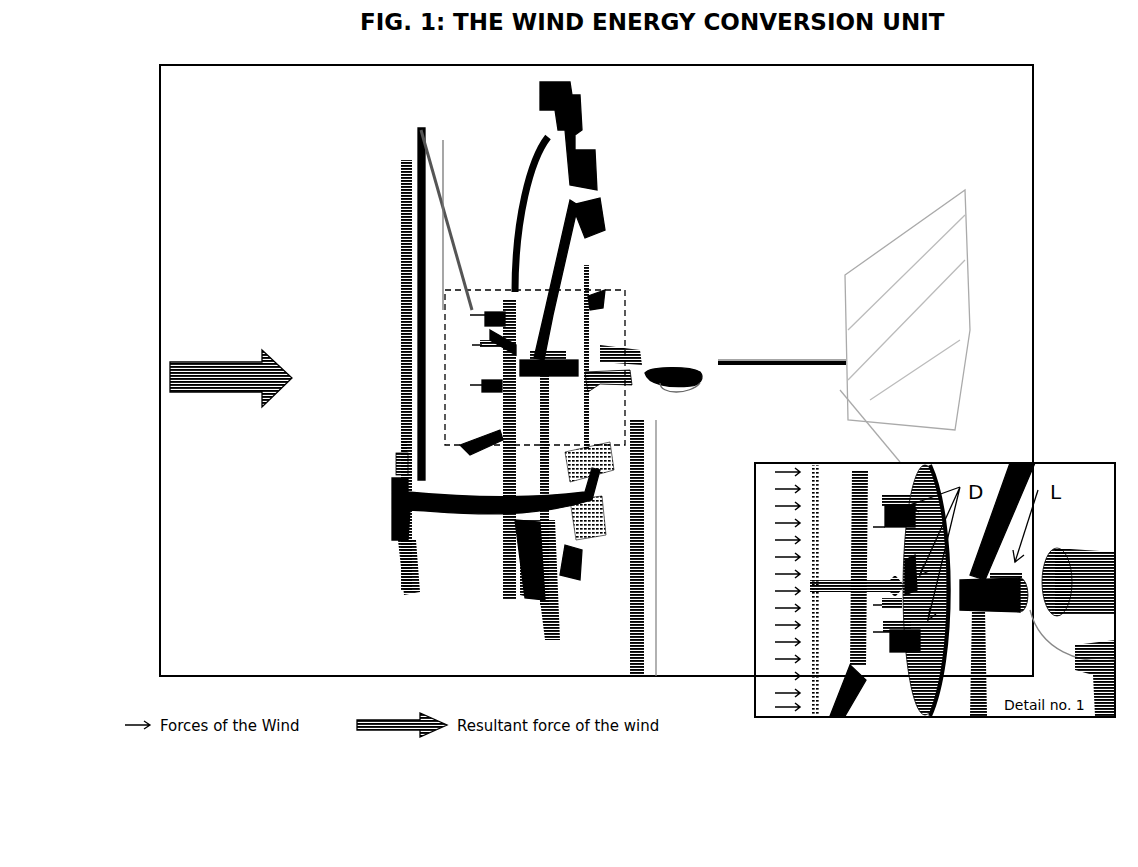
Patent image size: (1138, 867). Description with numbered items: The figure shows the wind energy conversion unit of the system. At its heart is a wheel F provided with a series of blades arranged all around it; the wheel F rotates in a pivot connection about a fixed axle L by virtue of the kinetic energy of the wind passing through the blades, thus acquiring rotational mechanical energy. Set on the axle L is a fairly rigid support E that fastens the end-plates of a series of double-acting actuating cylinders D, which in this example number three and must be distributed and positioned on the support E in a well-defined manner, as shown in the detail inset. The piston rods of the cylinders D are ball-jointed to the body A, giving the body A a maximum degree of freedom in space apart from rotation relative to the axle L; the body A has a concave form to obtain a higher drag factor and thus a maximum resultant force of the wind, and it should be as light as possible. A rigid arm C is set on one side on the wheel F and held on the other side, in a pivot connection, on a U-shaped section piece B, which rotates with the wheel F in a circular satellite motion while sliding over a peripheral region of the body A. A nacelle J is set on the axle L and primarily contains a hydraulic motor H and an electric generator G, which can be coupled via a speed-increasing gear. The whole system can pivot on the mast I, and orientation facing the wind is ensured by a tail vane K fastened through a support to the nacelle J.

The body A is at (400, 305).
The U-shaped section piece B is at (398, 465).
The rigid arm C is at (480, 540).
The double-acting actuating cylinders D is at (490, 300).
The support E is at (495, 420).
The wheel F is at (590, 272).
The electric generator G is at (696, 360).
The hydraulic motor H is at (632, 378).
The mast I is at (660, 605).
The nacelle J is at (723, 330).
The tail vane K is at (887, 300).
The fixed axle L is at (568, 345).